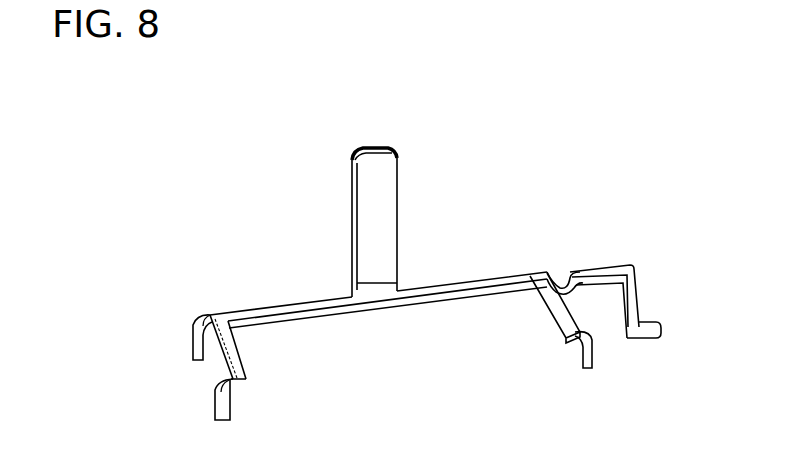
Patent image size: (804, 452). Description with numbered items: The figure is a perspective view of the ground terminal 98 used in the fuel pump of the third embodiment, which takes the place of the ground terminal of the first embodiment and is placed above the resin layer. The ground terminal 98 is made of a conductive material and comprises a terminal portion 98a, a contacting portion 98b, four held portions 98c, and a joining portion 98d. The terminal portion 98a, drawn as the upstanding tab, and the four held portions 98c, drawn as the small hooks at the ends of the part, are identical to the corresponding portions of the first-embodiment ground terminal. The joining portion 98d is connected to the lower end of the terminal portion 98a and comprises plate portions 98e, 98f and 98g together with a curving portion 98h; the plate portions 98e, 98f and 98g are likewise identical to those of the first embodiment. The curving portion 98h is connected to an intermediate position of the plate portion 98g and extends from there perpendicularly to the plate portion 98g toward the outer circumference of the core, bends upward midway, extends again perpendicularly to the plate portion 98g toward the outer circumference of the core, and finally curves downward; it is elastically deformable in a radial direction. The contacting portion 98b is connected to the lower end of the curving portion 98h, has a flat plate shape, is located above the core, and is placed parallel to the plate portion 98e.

The ground terminal 98 is at (438, 132).
The terminal portion 98a is at (377, 168).
The contacting portion 98b is at (644, 328).
The held portions 98c is at (200, 350).
The joining portion 98d is at (381, 318).
The plate portion 98e is at (292, 304).
The plate portion 98f is at (227, 357).
The plate portion 98g is at (557, 313).
The curving portion 98h is at (607, 276).